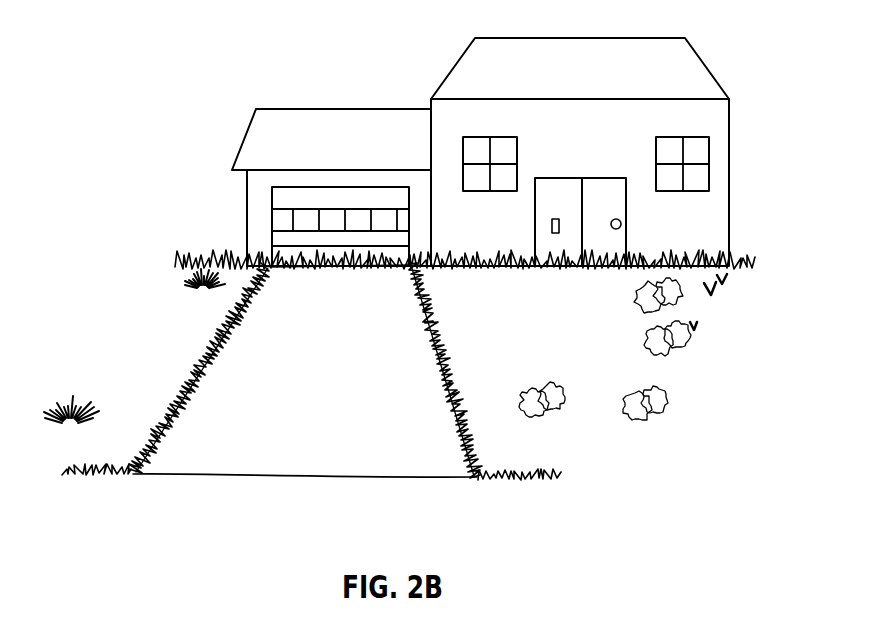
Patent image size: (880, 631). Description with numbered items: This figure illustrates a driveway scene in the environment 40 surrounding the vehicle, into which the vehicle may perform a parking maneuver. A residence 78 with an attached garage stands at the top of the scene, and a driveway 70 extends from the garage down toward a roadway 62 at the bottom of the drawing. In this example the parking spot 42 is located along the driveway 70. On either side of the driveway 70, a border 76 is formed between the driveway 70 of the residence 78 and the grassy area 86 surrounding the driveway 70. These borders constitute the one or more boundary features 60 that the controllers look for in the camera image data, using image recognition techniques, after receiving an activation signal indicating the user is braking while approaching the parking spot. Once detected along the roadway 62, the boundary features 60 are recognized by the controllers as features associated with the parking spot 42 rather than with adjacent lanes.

The environment 40 is at (183, 72).
The parking spot 42 is at (262, 364).
The boundary features 60 is at (172, 435).
The roadway 62 is at (170, 465).
The driveway 70 is at (390, 368).
The border 76 is at (230, 328).
The residence 78 is at (702, 57).
The grassy area 86 is at (538, 457).